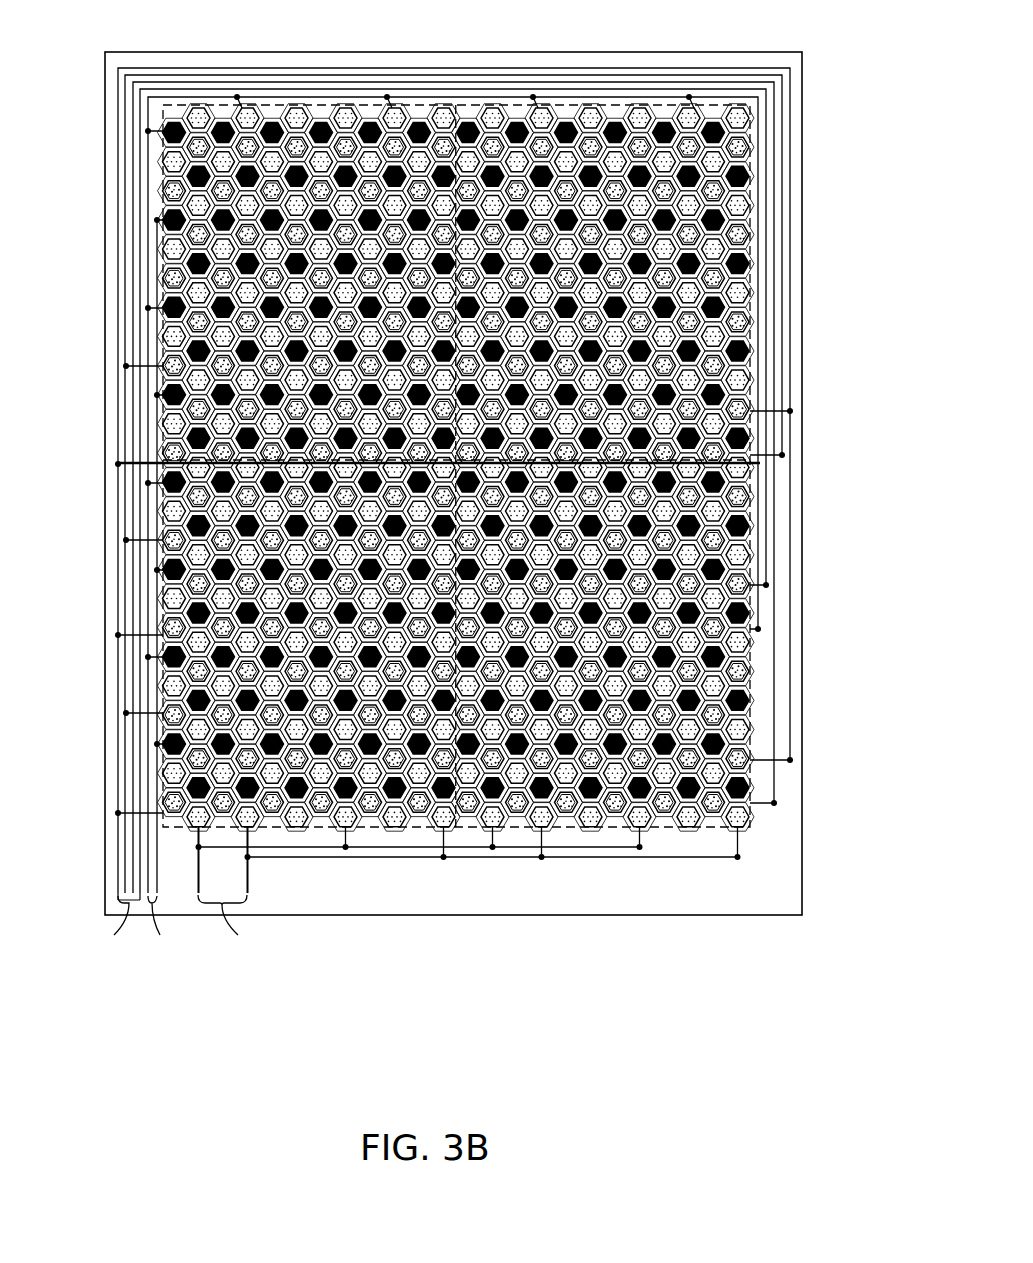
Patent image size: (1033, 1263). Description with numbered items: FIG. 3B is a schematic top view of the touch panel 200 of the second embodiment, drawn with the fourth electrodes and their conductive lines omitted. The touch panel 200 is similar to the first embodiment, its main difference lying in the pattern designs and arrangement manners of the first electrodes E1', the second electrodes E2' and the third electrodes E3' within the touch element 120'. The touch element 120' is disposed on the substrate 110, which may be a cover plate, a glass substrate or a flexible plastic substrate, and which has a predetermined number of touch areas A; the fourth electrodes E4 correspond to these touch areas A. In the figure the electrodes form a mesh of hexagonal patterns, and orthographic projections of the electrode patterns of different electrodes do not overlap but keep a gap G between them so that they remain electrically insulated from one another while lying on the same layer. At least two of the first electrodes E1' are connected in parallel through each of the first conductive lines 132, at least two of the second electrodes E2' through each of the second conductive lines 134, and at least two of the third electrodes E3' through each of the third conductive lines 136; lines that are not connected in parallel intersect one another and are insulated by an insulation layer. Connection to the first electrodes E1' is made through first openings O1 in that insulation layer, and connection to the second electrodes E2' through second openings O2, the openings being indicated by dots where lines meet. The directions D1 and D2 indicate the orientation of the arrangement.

The substrate 110 is at (163, 60).
The touch element 120' is at (780, 1016).
The first conductive lines 132 is at (167, 934).
The second conductive lines 134 is at (232, 934).
The third conductive lines 136 is at (115, 933).
The touch panel 200 is at (742, 1137).
The first electrodes E1' is at (500, 445).
The second electrodes E2' is at (454, 452).
The third electrodes E3' is at (457, 515).
The fourth electrodes E4 is at (567, 103).
The first openings O1 is at (146, 133).
The second openings O2 is at (443, 861).
The gap G is at (186, 232).
The touch areas A is at (165, 440).
The first direction D1 is at (128, 1043).
The second direction D2 is at (128, 1043).